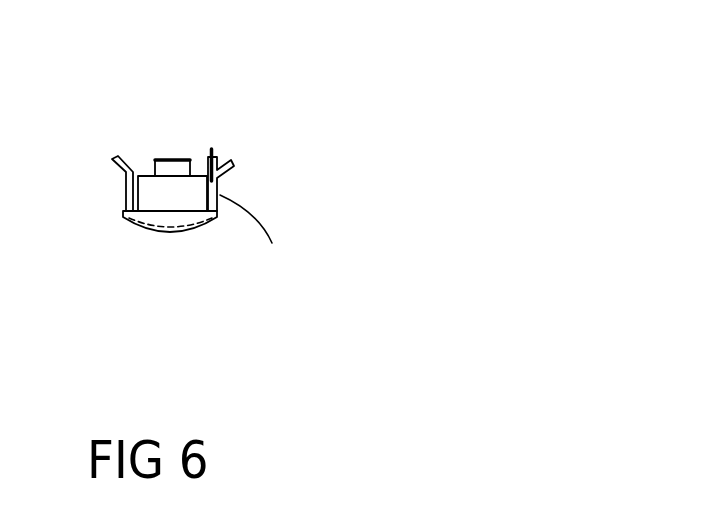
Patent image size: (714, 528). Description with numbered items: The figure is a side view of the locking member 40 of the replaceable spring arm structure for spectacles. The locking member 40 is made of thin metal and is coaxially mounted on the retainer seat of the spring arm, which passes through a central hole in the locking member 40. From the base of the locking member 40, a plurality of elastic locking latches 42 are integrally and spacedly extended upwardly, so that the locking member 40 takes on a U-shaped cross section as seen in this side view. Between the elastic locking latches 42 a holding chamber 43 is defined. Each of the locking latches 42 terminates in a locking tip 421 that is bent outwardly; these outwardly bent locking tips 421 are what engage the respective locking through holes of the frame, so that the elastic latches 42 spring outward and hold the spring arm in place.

The locking member 40 is at (318, 150).
The elastic locking latch 42 is at (183, 205).
The locking tip 421 is at (173, 160).
The holding chamber 43 is at (212, 157).